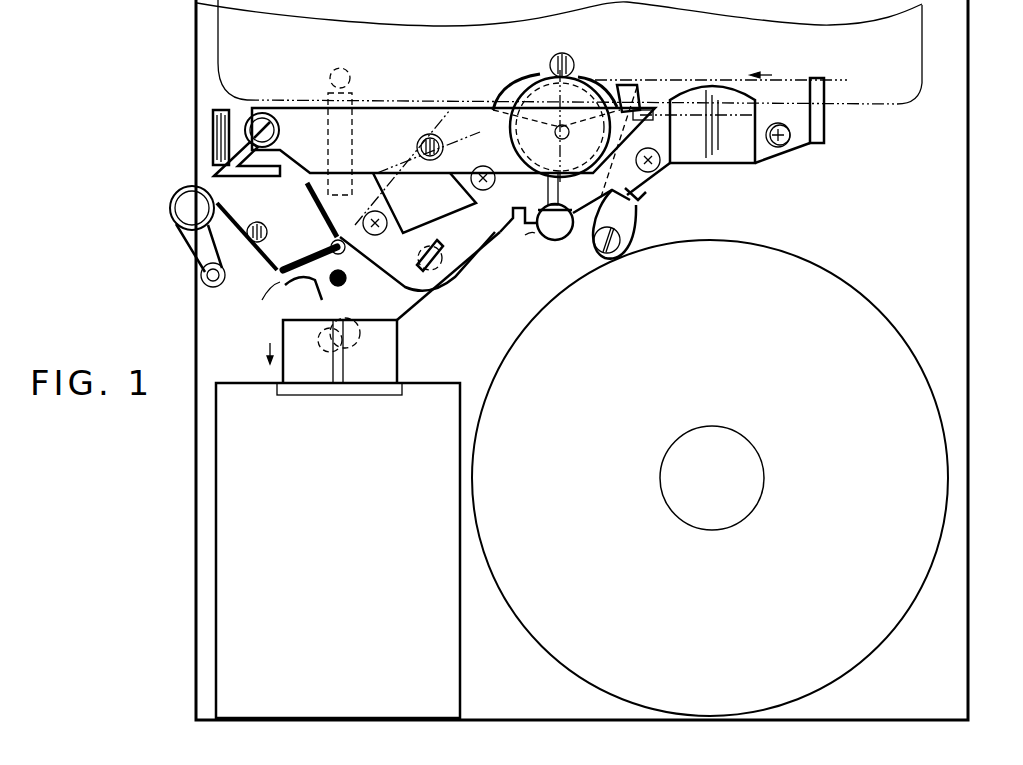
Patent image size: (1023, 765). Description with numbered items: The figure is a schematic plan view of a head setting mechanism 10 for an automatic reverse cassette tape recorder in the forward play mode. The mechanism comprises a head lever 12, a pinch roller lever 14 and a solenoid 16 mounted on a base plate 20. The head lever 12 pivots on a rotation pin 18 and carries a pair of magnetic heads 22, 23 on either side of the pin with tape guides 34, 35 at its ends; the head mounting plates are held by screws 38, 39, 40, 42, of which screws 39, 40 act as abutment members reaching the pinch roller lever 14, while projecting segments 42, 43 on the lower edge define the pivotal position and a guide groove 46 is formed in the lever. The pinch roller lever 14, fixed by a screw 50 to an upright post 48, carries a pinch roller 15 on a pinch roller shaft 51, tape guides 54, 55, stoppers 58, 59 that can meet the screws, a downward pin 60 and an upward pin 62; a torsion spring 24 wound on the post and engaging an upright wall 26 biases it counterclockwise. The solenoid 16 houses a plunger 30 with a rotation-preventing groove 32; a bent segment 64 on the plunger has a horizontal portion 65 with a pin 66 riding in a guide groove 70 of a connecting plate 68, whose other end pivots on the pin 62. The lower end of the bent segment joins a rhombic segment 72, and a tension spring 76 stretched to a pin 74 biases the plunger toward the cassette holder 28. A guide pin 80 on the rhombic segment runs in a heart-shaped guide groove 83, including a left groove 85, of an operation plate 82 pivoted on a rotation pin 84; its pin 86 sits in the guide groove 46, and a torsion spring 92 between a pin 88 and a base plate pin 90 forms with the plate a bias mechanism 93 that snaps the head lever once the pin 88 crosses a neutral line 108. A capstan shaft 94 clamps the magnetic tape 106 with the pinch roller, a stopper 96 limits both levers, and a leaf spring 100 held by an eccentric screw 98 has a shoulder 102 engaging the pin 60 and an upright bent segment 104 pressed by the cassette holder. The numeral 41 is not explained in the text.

The head setting mechanism 10 is at (833, 151).
The head lever 12 is at (767, 161).
The pinch roller lever 14 is at (405, 106).
The pinch roller 15 is at (500, 85).
The solenoid 16 is at (458, 381).
The rotation pin 18 is at (569, 134).
The base plate 20 is at (968, 128).
The magnetic head 22 is at (742, 167).
The magnetic head 23 is at (462, 212).
The torsion spring 24 is at (222, 176).
The upright wall 26 is at (213, 128).
The cassette holder 28 is at (922, 30).
The plunger 30 is at (398, 343).
The rotation-preventing elongated groove 32 is at (345, 355).
The tape guide 34 is at (824, 125).
The tape guide 35 is at (305, 192).
The screw 38 is at (785, 147).
The screw 39 is at (660, 170).
The screw 40 is at (490, 191).
The pivot pin 41 is at (400, 216).
The projecting segment 42 is at (635, 198).
The projecting segment 43 is at (522, 236).
The guide groove 46 is at (455, 262).
The upright post 48 is at (279, 130).
The screw 50 is at (255, 118).
The pinch roller shaft 51 is at (562, 139).
The tape guide 54 is at (540, 78).
The tape guide 55 is at (590, 74).
The stopper 58 is at (490, 110).
The stopper 59 is at (650, 110).
The pin 60 is at (622, 84).
The pin 62 is at (445, 143).
The bent segment 64 is at (290, 320).
The horizontal portion 65 is at (350, 335).
The pin 66 is at (310, 299).
The connecting plate 68 is at (430, 247).
The guide groove 70 is at (332, 345).
The rhombic segment 72 is at (408, 324).
The pin 74 is at (350, 78).
The tension spring 76 is at (349, 127).
The guide pin 80 is at (330, 245).
The operation plate 82 is at (272, 290).
The heart-shaped guide groove 83 is at (300, 262).
The rotation pin 84 is at (350, 280).
The left groove 85 is at (224, 272).
The pin 86 is at (450, 283).
The pin 88 is at (250, 236).
The pin 90 is at (213, 288).
The torsion spring 92 is at (185, 230).
The bias mechanism 93 is at (156, 203).
The capstan shaft 94 is at (563, 53).
The stopper 96 is at (555, 240).
The eccentric screw 98 is at (612, 253).
The leaf spring 100 is at (622, 233).
The shoulder 102 is at (642, 133).
The upright bent segment 104 is at (634, 85).
The magnetic tape 106 is at (790, 78).
The neutral line 108 is at (848, 270).